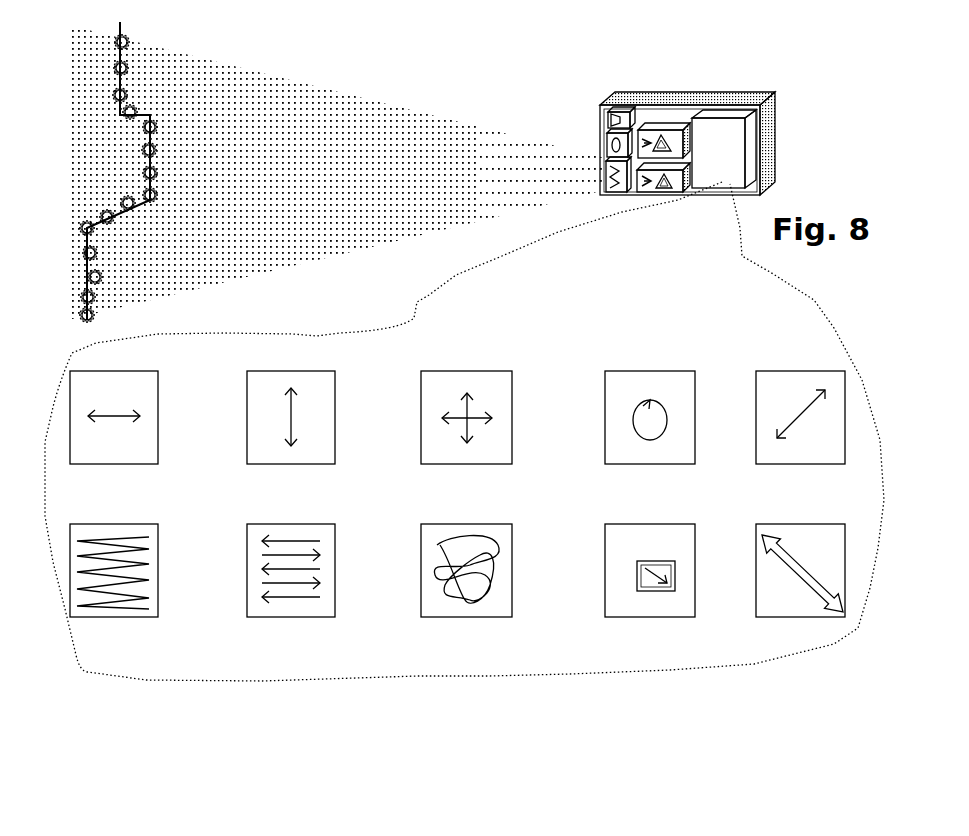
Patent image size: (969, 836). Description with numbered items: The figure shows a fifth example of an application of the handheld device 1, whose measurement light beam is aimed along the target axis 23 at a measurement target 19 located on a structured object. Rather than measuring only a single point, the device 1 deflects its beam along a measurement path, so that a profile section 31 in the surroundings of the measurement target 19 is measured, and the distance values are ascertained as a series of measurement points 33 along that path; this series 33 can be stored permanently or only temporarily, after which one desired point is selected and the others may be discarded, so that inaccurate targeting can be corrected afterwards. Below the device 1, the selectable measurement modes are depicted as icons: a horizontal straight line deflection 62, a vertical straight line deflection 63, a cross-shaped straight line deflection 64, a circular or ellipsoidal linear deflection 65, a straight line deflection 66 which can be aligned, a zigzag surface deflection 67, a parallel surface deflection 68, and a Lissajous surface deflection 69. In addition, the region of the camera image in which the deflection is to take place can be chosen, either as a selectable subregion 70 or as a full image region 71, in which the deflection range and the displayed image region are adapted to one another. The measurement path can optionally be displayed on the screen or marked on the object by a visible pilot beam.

The device 1 is at (672, 75).
The measurement target 19 is at (248, 119).
The target axis 23 is at (336, 172).
The profile section 31 is at (157, 171).
The series of measurement points 33 is at (216, 36).
The horizontal straight line deflection 62 is at (114, 438).
The vertical straight line deflection 63 is at (291, 438).
The cross-shaped straight line deflection 64 is at (466, 438).
The circular or ellipsoidal linear deflection 65 is at (650, 439).
The straight line deflection which can be aligned 66 is at (800, 439).
The zigzag surface deflection 67 is at (115, 591).
The parallel surface deflection 68 is at (291, 591).
The Lissajous surface deflection 69 is at (466, 591).
The selectable subregion 70 is at (650, 594).
The full image region 71 is at (800, 594).